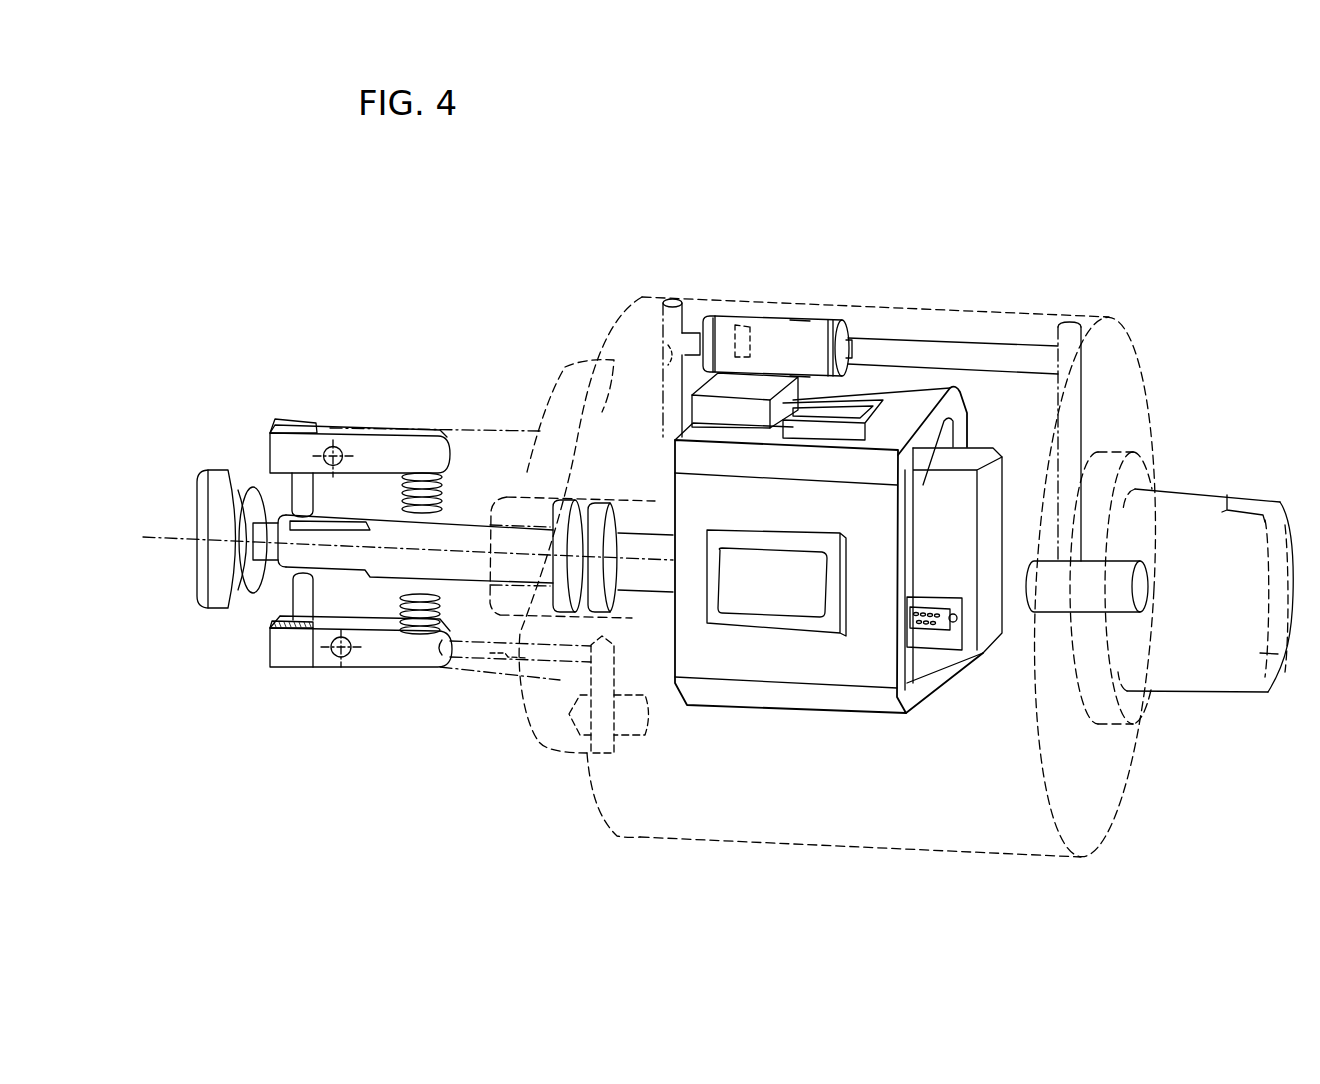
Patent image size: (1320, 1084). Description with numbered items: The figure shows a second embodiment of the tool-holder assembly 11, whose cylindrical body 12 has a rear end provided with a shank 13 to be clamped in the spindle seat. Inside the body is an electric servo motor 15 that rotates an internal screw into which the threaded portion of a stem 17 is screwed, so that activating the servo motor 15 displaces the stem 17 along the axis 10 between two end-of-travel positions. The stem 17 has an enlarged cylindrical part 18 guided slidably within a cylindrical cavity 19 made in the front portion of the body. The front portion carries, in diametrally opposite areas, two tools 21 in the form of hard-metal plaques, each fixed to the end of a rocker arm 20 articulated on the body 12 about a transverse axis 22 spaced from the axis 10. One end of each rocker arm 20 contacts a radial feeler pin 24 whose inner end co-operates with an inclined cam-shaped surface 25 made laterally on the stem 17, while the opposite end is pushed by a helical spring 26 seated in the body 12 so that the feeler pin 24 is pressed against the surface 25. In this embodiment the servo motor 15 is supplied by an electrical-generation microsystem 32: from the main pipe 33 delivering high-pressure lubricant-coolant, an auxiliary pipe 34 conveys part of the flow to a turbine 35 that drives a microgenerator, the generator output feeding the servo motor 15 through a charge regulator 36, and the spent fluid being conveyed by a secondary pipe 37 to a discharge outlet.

The axis 10 is at (152, 545).
The tool-holder assembly 11 is at (1103, 215).
The cylindrical body 12 is at (1052, 302).
The shank 13 is at (1200, 490).
The electric servo motor 15 is at (957, 672).
The stem 17 is at (355, 567).
The enlarged cylindrical part 18 is at (622, 508).
The cylindrical cavity 19 is at (511, 487).
The rocker arm 20 is at (316, 431).
The tool 21 is at (298, 434).
The axis 22 is at (345, 452).
The radial feeler pin 24 is at (302, 490).
The inclined cam-shaped surface 25 is at (330, 508).
The helical spring 26 is at (432, 478).
The electrical-generation microsystem 32 is at (808, 326).
The main pipe 33 is at (490, 655).
The auxiliary pipe 34 is at (652, 360).
The turbine 35 is at (765, 325).
The charge regulator 36 is at (790, 415).
The secondary pipe 37 is at (1003, 348).